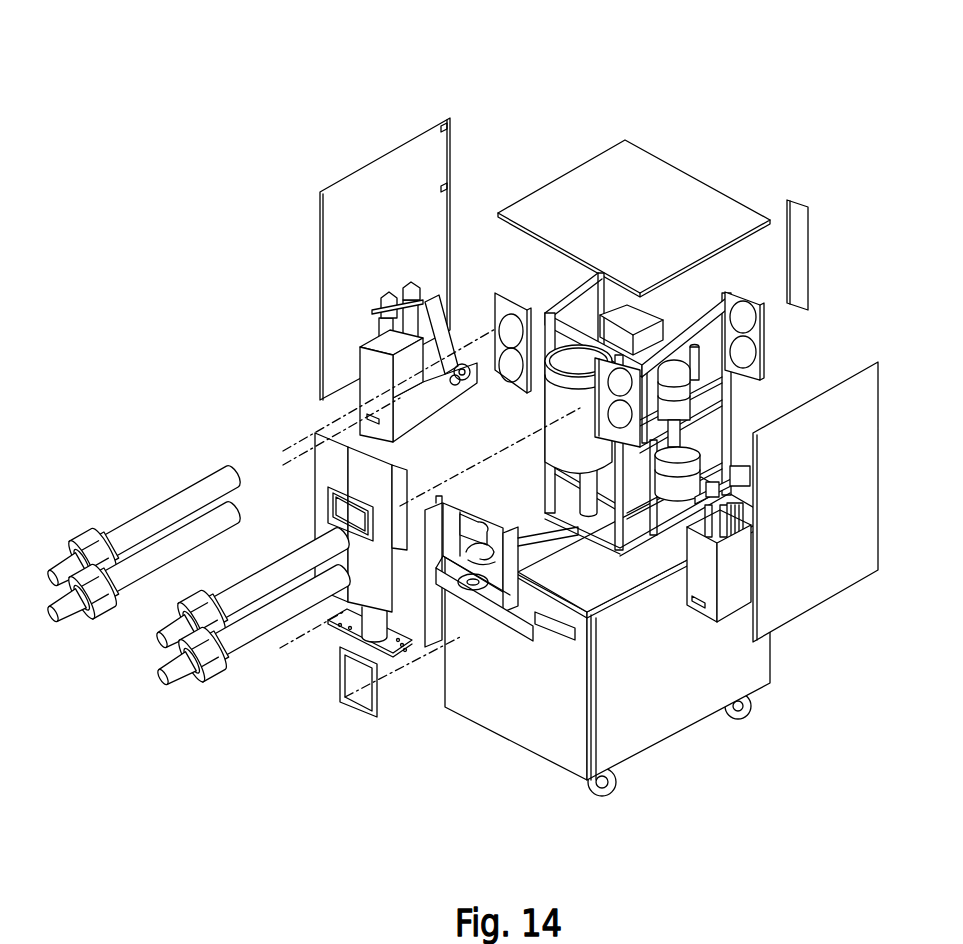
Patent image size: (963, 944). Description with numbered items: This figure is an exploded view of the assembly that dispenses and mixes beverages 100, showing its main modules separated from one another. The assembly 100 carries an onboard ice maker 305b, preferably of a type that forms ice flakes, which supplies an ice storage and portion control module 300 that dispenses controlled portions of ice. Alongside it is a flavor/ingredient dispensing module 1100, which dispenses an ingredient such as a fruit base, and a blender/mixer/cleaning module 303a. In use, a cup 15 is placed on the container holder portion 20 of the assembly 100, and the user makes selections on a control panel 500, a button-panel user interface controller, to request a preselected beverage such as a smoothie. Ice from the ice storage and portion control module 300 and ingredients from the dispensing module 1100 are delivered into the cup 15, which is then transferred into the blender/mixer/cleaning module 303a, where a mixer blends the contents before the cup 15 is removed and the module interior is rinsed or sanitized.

The assembly that dispenses and mixes beverages 100 is at (458, 408).
The cup 15 is at (68, 572).
The container holder portion 20 is at (497, 573).
The ice storage and portion control module 300 is at (558, 400).
The blender/mixer/cleaning module 303a is at (707, 585).
The ice maker 305b is at (673, 477).
The control panel 500 is at (332, 477).
The flavor/ingredient dispensing module 1100 is at (687, 707).